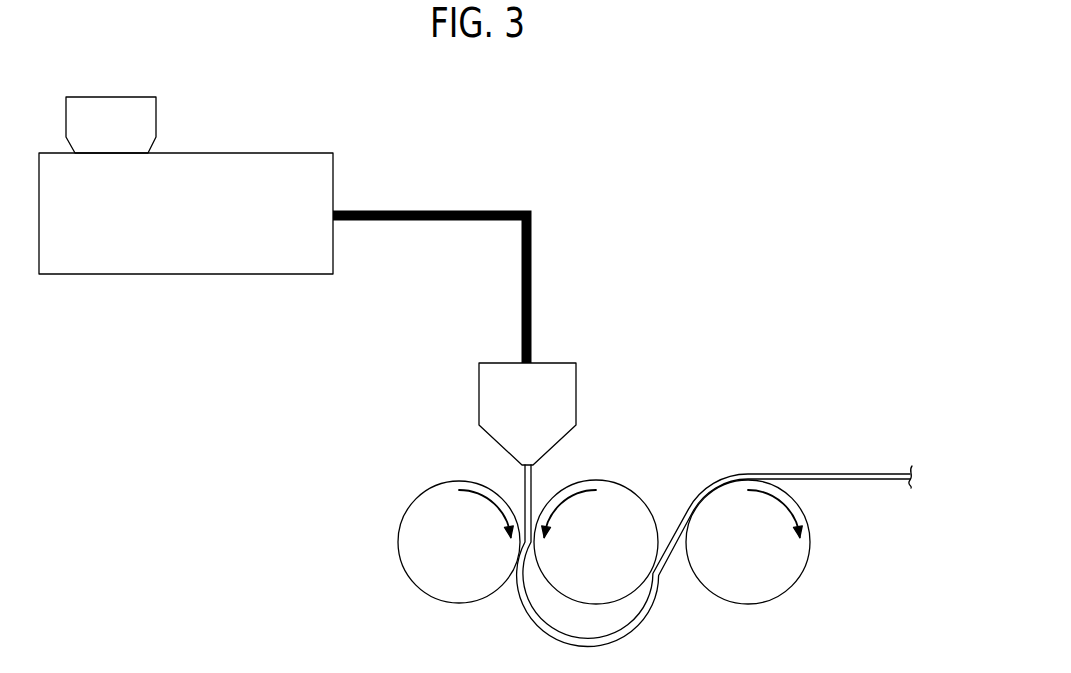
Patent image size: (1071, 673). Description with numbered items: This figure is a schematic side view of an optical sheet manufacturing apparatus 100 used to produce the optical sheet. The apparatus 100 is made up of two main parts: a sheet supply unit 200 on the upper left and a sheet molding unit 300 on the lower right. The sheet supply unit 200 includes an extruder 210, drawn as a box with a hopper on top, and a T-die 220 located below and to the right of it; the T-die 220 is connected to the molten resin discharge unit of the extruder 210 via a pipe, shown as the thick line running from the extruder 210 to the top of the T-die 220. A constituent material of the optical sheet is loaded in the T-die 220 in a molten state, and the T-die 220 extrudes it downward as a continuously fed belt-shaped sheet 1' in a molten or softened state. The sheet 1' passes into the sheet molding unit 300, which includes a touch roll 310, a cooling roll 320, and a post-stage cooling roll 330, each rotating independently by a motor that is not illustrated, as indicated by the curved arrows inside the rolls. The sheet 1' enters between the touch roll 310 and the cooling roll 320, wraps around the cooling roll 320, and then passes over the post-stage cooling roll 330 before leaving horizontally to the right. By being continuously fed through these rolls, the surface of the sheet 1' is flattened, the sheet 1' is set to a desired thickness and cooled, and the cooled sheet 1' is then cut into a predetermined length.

The optical sheet manufacturing apparatus 100 is at (713, 120).
The sheet supply unit 200 is at (478, 150).
The extruder 210 is at (255, 153).
The T-die 220 is at (479, 393).
The sheet molding unit 300 is at (872, 392).
The touch roll 310 is at (400, 520).
The cooling roll 320 is at (613, 485).
The post-stage cooling roll 330 is at (747, 600).
The belt-shaped sheet 1' is at (714, 555).